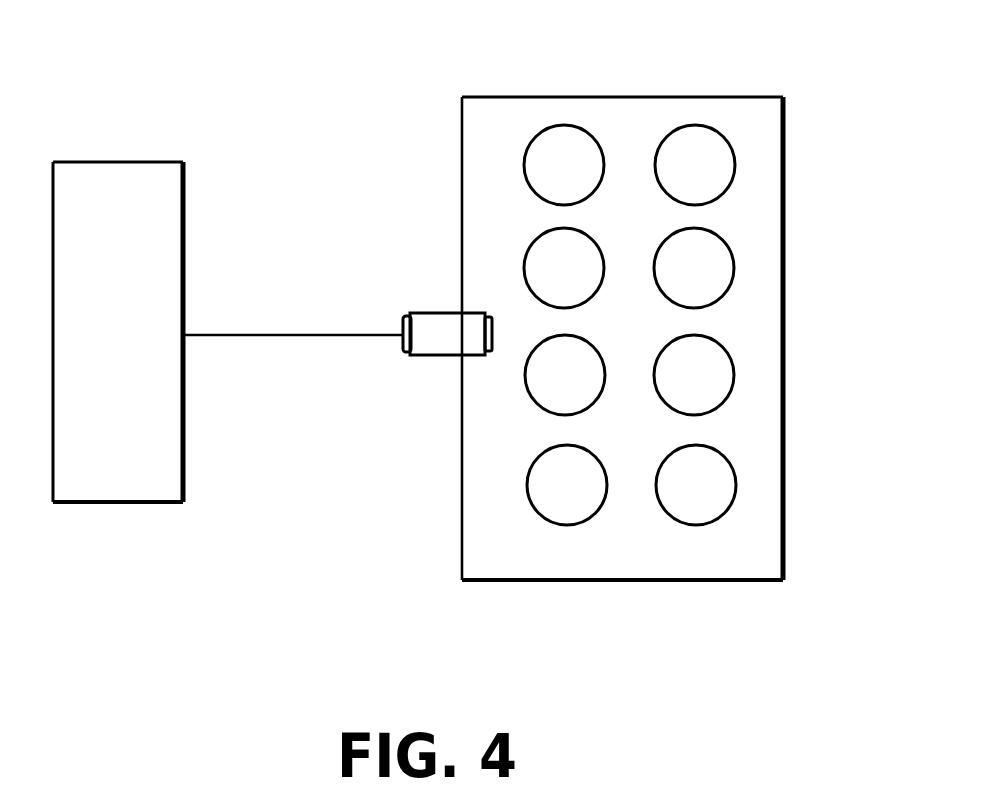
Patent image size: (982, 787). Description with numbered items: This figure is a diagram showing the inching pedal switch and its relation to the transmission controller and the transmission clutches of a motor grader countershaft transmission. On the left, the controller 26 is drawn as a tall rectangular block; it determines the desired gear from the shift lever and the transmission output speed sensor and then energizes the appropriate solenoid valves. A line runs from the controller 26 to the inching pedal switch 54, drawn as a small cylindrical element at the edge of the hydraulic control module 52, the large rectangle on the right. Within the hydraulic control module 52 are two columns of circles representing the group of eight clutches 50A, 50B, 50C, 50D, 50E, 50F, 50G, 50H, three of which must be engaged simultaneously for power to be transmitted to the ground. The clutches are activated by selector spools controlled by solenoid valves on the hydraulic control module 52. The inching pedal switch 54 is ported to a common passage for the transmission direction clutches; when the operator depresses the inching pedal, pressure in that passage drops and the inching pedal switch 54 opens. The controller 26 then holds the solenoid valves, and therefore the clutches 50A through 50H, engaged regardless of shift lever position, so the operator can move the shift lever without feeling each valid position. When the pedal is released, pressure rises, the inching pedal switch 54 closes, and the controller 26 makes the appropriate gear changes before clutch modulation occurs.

The controller 26 is at (147, 167).
The hydraulic control module 52 is at (645, 97).
The inching pedal switch 54 is at (443, 345).
The clutch 50A is at (537, 153).
The clutch 50B is at (728, 160).
The clutch 50C is at (530, 260).
The clutch 50D is at (733, 262).
The clutch 50E is at (530, 397).
The clutch 50F is at (728, 378).
The clutch 50G is at (530, 502).
The clutch 50H is at (728, 497).